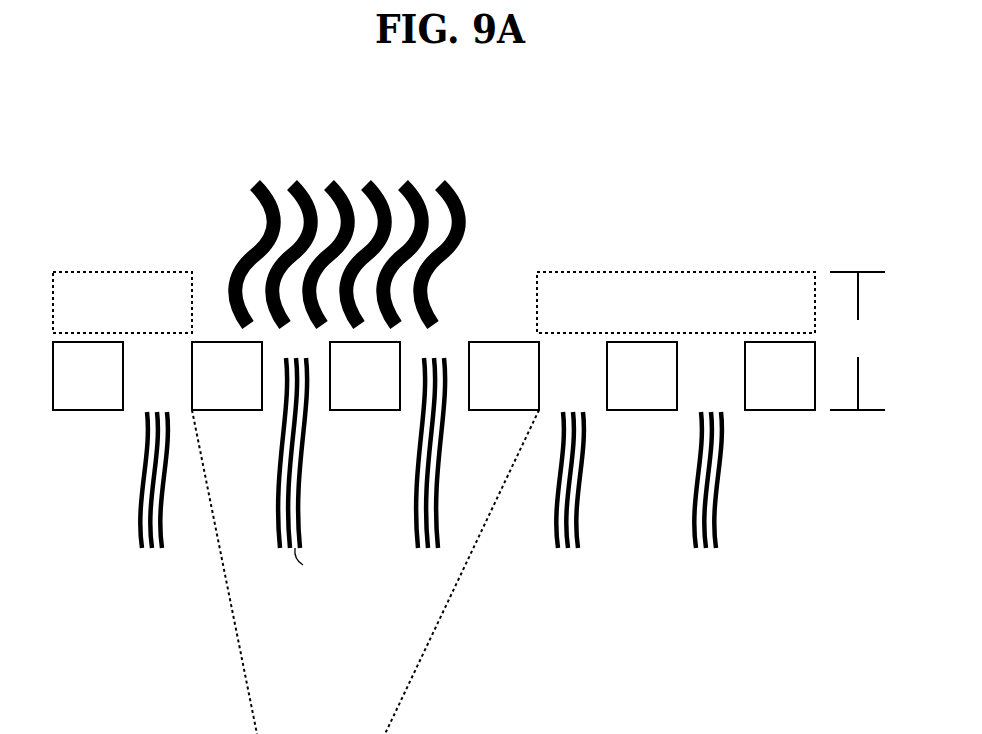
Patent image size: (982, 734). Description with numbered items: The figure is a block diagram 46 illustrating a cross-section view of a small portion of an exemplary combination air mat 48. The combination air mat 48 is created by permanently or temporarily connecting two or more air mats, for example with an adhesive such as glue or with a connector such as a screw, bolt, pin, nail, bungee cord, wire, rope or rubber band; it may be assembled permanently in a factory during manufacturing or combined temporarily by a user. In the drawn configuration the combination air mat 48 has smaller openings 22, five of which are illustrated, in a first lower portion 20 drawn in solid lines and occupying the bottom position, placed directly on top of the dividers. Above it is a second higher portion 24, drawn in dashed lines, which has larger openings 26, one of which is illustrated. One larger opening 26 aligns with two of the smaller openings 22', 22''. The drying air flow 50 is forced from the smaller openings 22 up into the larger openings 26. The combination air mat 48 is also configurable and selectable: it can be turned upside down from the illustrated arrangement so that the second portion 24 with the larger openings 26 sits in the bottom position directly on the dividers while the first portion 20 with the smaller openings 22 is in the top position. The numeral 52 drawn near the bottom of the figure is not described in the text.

The first lower portion 20 is at (780, 392).
The smaller openings 22 is at (431, 456).
The smaller opening 22' is at (303, 439).
The smaller opening 22'' is at (434, 439).
The second higher portion 24 is at (703, 297).
The larger openings 26 is at (485, 273).
The block diagram 46 is at (604, 114).
The combination air mat 48 is at (857, 341).
The drying air flow 50 is at (347, 605).
The air duct 52 is at (434, 572).